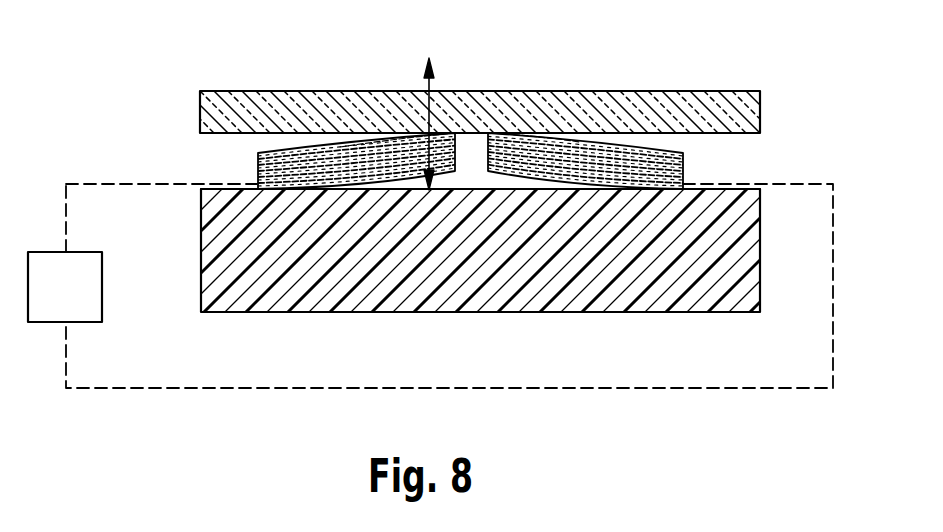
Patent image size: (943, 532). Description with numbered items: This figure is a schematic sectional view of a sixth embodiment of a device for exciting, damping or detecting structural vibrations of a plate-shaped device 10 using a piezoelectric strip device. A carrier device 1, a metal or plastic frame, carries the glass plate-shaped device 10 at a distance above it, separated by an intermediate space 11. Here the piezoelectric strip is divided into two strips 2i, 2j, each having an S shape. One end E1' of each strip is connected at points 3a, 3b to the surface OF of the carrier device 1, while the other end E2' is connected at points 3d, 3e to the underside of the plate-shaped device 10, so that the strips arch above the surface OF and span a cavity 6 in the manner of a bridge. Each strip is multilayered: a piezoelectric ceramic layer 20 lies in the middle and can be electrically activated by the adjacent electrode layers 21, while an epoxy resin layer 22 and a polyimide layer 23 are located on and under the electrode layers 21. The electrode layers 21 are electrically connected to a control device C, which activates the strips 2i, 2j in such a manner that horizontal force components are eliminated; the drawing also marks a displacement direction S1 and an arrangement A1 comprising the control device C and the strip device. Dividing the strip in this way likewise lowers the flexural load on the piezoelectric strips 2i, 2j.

The carrier device 1 is at (750, 276).
The cavity 6 is at (492, 181).
The plate-shaped device 10 is at (750, 113).
The intermediate space 11 is at (735, 148).
The piezoelectric ceramic layer 20 is at (684, 170).
The electrode layers 21 is at (257, 174).
The epoxy resin layer 22 is at (548, 138).
The polyimide layer 23 is at (365, 147).
The piezoelectric strip 2i is at (305, 146).
The piezoelectric strip 2j is at (601, 137).
The connection region 3a is at (278, 188).
The connection region 3b is at (658, 183).
The connection point 3d is at (473, 136).
The connection point 3e is at (493, 136).
The first end E1' is at (474, 95).
The second end E2' is at (502, 68).
The stroke / displacement direction S1 is at (424, 110).
The actuator unit A1 is at (163, 160).
The surface OF is at (745, 189).
The control device C is at (93, 292).